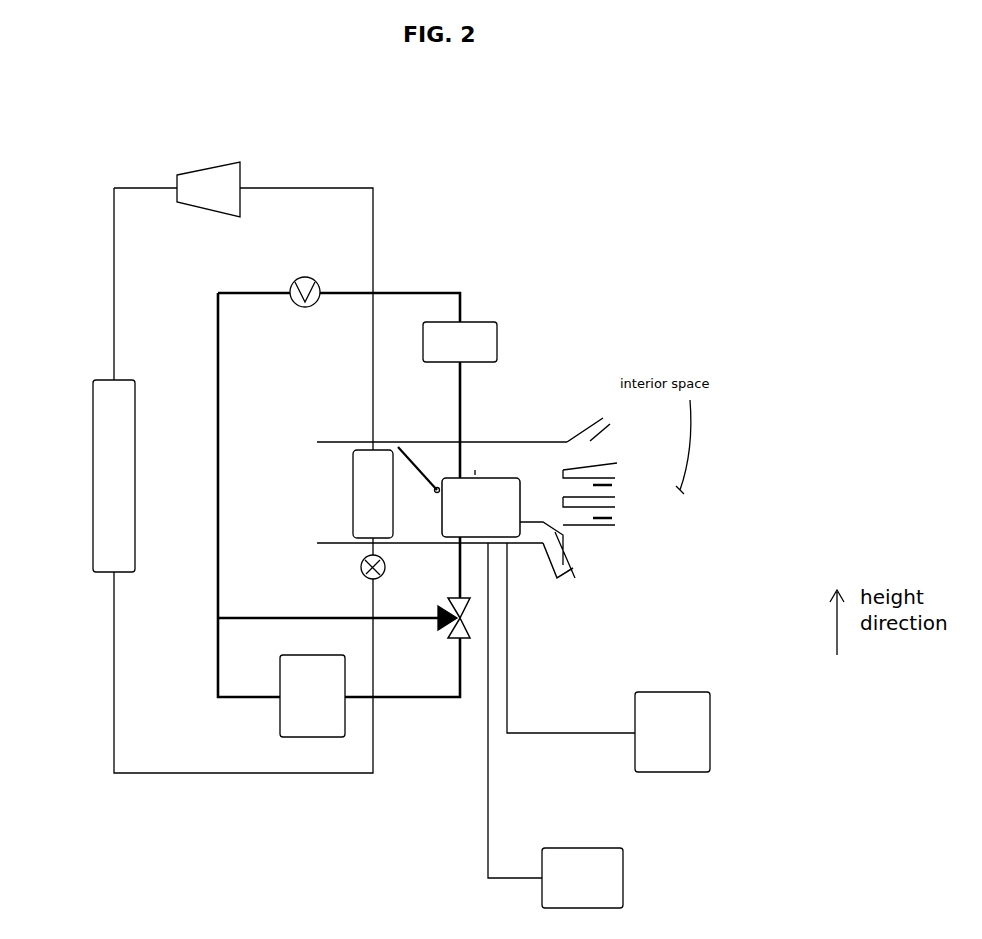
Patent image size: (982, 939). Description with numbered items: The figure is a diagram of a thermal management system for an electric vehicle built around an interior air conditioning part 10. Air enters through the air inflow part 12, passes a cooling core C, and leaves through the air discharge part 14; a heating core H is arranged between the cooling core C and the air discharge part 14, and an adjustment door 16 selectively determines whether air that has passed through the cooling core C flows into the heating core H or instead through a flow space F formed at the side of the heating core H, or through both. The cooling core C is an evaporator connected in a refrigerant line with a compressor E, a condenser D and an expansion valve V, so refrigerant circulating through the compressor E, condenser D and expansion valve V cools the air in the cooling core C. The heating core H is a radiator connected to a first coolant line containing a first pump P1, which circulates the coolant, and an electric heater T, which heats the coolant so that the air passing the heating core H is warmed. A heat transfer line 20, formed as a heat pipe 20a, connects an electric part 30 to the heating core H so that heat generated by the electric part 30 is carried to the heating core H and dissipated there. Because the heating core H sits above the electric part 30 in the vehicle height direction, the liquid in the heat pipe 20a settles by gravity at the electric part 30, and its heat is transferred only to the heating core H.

The compressor E is at (208, 168).
The first pump P1 is at (300, 278).
The electric heater T is at (486, 320).
The condenser D is at (93, 483).
The cooling core C is at (365, 447).
The adjustment door 16 is at (423, 458).
The flow space F is at (488, 465).
The air inflow part 12 is at (332, 501).
The interior air conditioning part 10 is at (557, 427).
The air discharge part 14 is at (548, 499).
The heating core H is at (565, 543).
The expansion valve V is at (360, 568).
The heat pipe 20a is at (492, 650).
The heat transfer line 20 is at (502, 775).
The electric part 30 is at (625, 862).